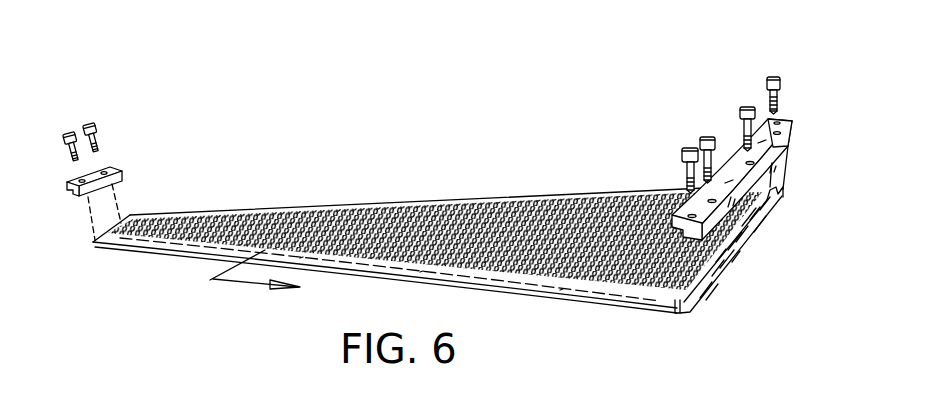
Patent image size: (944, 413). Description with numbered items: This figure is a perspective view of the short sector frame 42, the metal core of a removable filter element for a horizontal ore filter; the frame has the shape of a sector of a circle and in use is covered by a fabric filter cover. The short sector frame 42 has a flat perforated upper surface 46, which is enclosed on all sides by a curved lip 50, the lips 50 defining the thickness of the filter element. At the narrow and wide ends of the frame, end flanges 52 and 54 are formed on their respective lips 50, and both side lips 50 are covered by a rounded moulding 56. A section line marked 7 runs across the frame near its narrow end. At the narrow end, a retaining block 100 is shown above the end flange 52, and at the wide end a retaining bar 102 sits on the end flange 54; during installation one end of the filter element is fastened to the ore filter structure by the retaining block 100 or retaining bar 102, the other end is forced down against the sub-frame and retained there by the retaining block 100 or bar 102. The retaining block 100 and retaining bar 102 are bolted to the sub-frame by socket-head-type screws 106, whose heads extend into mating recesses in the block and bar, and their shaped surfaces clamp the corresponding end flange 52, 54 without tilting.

The short sector frame 42 is at (608, 123).
The flat perforated upper surface 46 is at (482, 217).
The curved lip 50 is at (730, 252).
The end flange 52 is at (93, 244).
The end flange 54 is at (720, 288).
The rounded moulding 56 is at (648, 313).
The section line 7- 7 is at (255, 283).
The retaining block 100 is at (121, 172).
The retaining bar 102 is at (767, 117).
The socket-head-type screws 106 is at (93, 124).